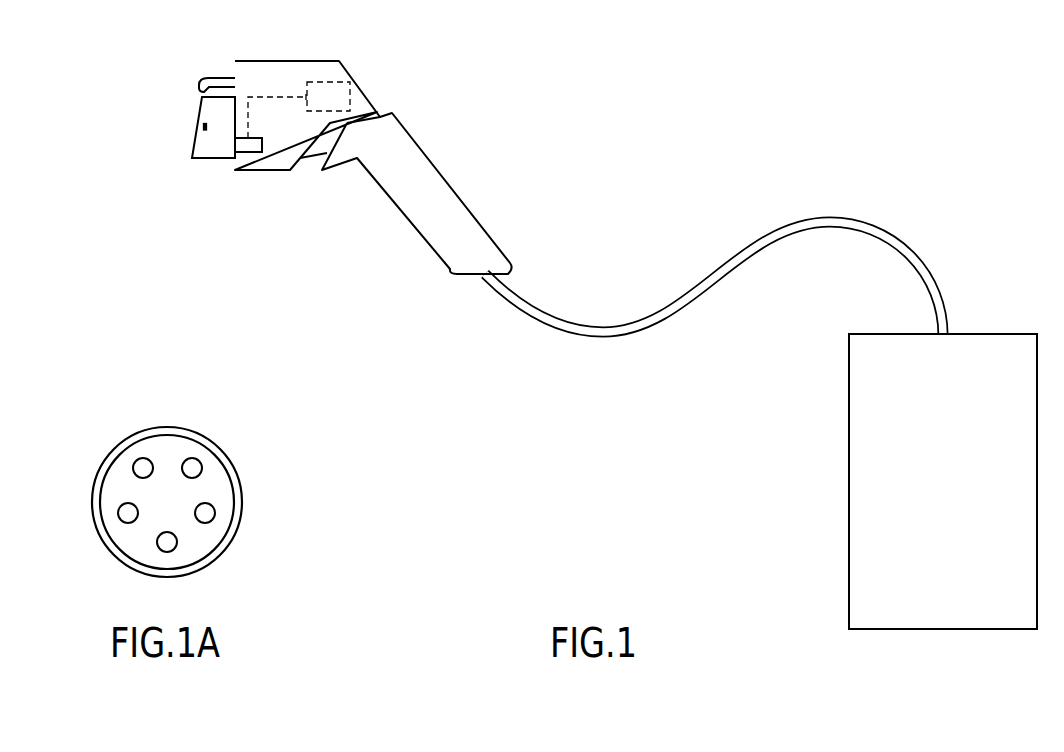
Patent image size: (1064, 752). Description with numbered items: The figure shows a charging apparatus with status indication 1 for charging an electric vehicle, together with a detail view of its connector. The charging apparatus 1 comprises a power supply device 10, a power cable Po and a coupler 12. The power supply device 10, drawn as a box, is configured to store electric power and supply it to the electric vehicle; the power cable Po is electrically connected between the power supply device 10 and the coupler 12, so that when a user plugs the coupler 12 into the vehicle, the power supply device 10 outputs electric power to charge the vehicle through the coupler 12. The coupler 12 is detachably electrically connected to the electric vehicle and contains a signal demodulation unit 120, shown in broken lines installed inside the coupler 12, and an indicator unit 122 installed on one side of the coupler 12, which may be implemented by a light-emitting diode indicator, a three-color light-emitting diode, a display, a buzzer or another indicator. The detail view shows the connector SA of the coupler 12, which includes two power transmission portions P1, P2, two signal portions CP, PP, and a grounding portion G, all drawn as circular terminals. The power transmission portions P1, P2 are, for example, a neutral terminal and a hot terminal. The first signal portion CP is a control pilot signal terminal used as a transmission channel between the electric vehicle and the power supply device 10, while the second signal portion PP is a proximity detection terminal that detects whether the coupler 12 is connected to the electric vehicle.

In FIG. 1, the charging apparatus with status indication 1 is at (590, 321).
In FIG. 1, the power supply device 10 is at (847, 461).
In FIG. 1, the coupler 12 is at (293, 70).
In FIG. 1, the signal demodulation unit 120 is at (348, 85).
In FIG. 1, the indicator unit 122 is at (250, 153).
In FIG. 1, the connector SA is at (197, 127).
In FIG. 1A, the connector SA is at (163, 482).
In FIG. 1, the power cable Po is at (763, 236).
In FIG. 1A, the second signal portion PP is at (137, 462).
In FIG. 1A, the first signal portion CP is at (198, 462).
In FIG. 1A, the power transmission portion P1 is at (213, 521).
In FIG. 1A, the power transmission portion P2 is at (119, 513).
In FIG. 1A, the grounding portion G is at (159, 549).